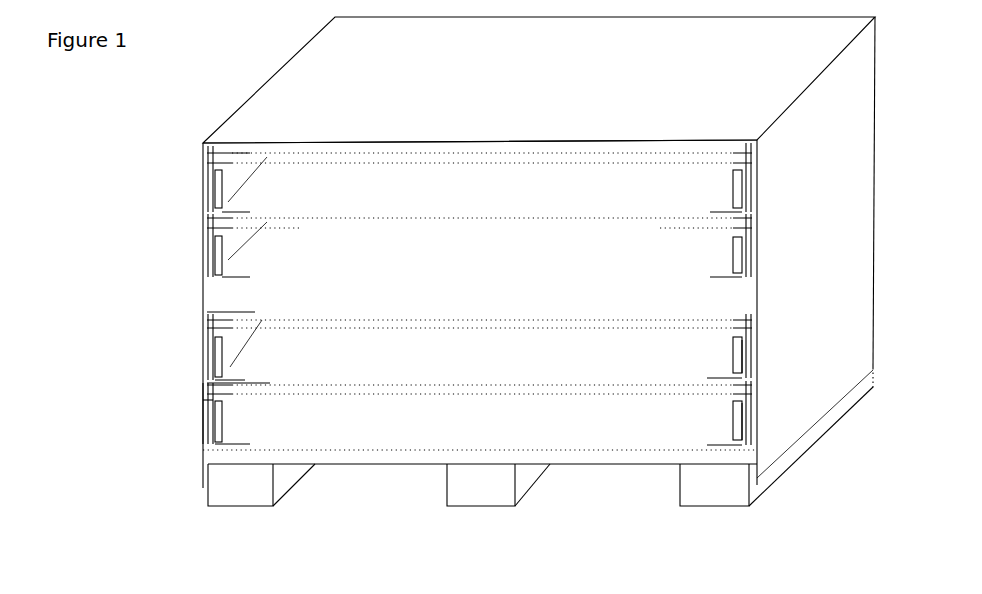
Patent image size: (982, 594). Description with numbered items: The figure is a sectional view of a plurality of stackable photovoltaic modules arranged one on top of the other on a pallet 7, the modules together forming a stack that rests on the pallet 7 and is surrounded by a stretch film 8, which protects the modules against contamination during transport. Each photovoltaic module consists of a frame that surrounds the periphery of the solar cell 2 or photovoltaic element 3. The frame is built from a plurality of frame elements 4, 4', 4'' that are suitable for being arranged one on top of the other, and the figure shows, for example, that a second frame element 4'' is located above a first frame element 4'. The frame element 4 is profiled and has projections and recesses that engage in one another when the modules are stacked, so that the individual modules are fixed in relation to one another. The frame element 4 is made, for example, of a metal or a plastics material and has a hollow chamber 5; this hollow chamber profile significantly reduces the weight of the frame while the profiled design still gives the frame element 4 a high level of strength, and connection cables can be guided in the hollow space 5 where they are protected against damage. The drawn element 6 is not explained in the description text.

The storage cabinet housing 2 is at (203, 163).
The drawers 3 is at (263, 389).
The drawer guide rail 4 is at (140, 422).
The drawer handle 5 is at (135, 430).
The upper drawer rail 4' is at (813, 400).
The lower drawer rail 4'' is at (798, 466).
The base plate 6 is at (205, 457).
The pallet 7 is at (208, 507).
The side wall 8 is at (833, 273).